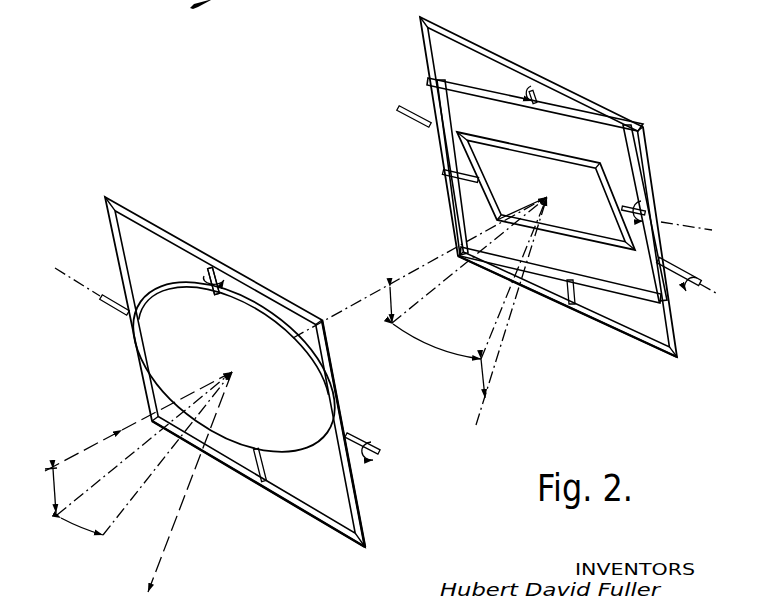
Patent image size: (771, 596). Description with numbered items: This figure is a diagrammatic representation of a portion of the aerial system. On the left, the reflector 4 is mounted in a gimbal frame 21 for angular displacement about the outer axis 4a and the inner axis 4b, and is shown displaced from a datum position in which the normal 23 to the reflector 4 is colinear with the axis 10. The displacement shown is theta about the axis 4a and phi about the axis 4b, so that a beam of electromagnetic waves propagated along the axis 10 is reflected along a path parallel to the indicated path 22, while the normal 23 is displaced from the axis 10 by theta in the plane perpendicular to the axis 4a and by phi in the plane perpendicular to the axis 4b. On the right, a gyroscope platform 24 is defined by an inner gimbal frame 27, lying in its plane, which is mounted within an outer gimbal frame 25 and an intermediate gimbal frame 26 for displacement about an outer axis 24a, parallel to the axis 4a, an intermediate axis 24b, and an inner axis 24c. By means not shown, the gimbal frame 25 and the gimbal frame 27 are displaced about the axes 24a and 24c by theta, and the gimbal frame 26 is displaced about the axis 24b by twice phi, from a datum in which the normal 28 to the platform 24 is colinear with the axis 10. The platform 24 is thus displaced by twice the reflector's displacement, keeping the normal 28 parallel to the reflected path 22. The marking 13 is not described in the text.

The reflector 4 is at (243, 318).
The outer axis 4a is at (381, 455).
The inner axis 4b is at (211, 266).
The axis 10 is at (93, 450).
The beam arrow 13 is at (229, 12).
The gimbal frame 21 is at (367, 522).
The path 22 is at (162, 563).
The normal 23 is at (119, 516).
The gyroscope platform 24 is at (561, 192).
The outer axis 24a is at (398, 108).
The intermediate axis 24b is at (531, 91).
The inner axis 24c is at (443, 173).
The outer gimbal frame 25 is at (638, 335).
The intermediate gimbal frame 26 is at (463, 86).
The inner gimbal frame 27 is at (578, 157).
The normal 28 is at (503, 351).